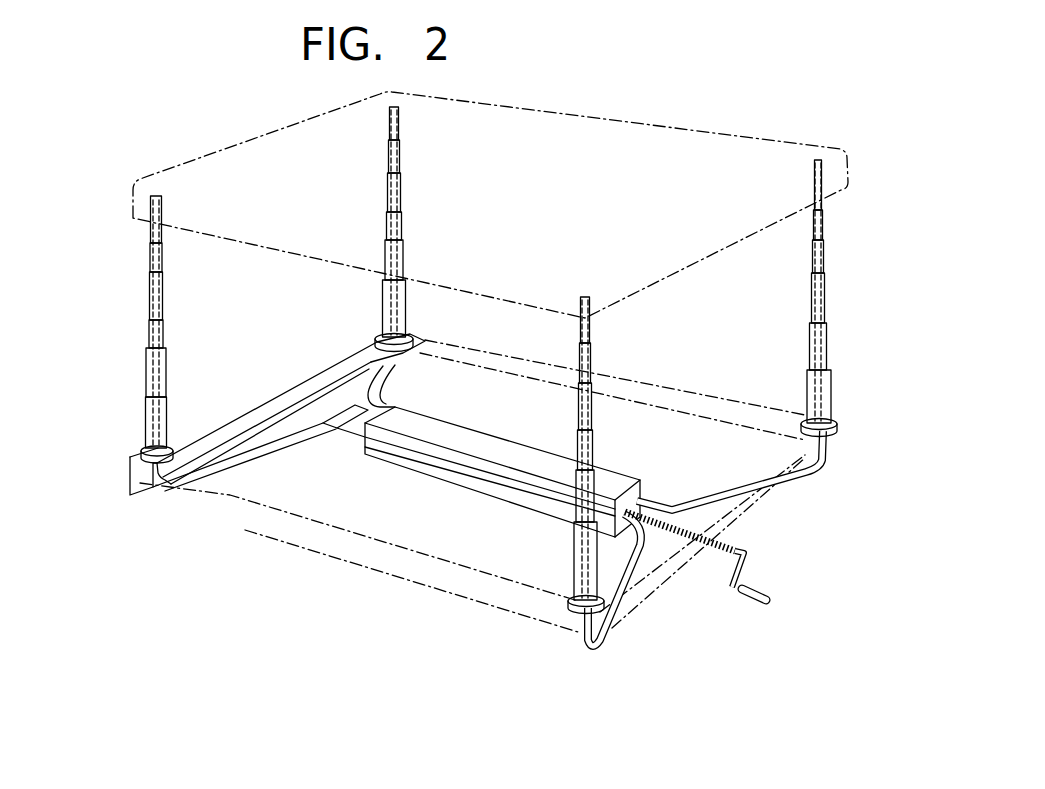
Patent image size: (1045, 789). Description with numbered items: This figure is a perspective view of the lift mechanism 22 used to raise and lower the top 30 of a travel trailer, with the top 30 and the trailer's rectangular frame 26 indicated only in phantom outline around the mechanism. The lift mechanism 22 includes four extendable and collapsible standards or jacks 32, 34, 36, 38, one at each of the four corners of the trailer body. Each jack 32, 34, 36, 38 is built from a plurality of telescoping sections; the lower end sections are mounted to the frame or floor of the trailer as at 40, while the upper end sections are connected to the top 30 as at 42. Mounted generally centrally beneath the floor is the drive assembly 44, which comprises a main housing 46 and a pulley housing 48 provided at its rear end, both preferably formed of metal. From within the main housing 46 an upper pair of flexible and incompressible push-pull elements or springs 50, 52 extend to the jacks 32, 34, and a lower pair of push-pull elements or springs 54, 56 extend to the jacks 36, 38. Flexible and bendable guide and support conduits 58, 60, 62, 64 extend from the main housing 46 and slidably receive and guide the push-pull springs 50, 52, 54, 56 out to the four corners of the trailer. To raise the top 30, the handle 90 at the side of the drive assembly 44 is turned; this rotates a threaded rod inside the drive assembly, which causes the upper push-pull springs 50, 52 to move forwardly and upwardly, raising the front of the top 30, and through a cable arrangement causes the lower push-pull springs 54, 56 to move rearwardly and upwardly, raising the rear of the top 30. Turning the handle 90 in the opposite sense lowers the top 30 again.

The lift mechanism 22 is at (426, 459).
The rectangular frame 26 is at (218, 500).
The top 30 is at (652, 112).
The jack 32 is at (504, 473).
The jack 34 is at (857, 293).
The jack 36 is at (444, 223).
The jack 38 is at (110, 324).
The lower end section mounting 40 is at (185, 450).
The upper end section connection 42 is at (160, 196).
The drive assembly 44 is at (437, 454).
The main housing 46 is at (455, 482).
The pulley housing 48 is at (352, 448).
The push-pull element or spring 50 is at (570, 567).
The push-pull element or spring 52 is at (825, 290).
The push-pull element or spring 54 is at (149, 340).
The push-pull element or spring 56 is at (408, 262).
The guide and support conduit 58 is at (628, 587).
The guide and support conduit 60 is at (755, 489).
The guide and support conduit 62 is at (257, 450).
The guide and support conduit 64 is at (373, 385).
The handle 90 is at (717, 552).